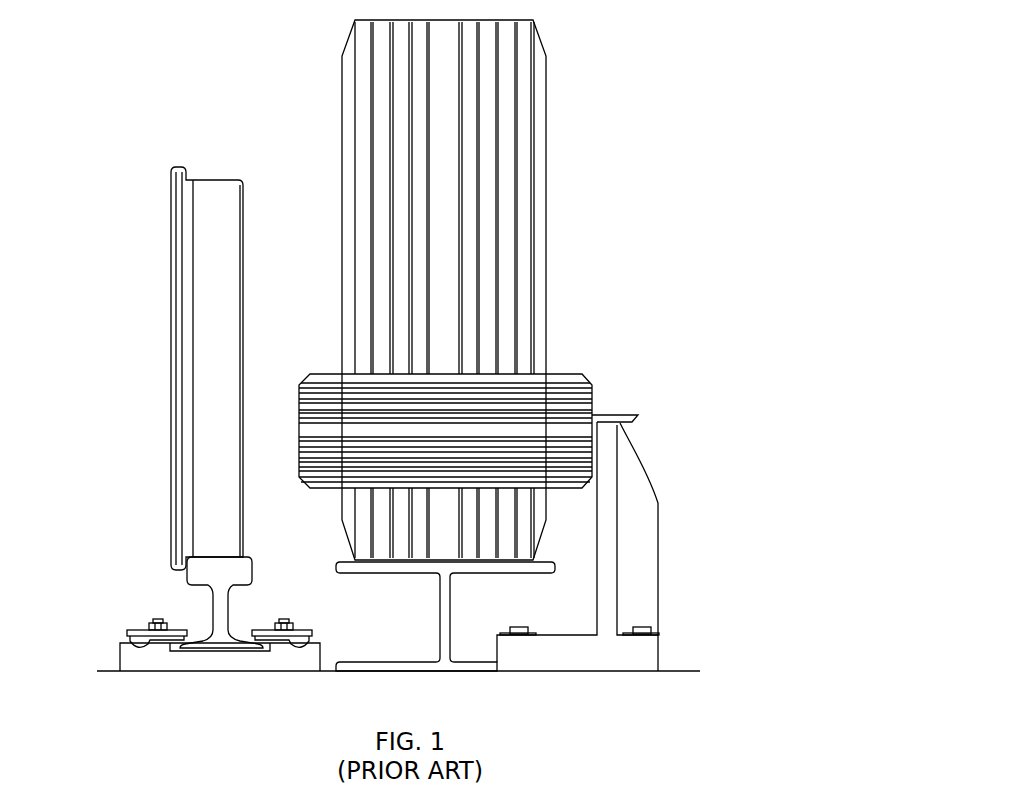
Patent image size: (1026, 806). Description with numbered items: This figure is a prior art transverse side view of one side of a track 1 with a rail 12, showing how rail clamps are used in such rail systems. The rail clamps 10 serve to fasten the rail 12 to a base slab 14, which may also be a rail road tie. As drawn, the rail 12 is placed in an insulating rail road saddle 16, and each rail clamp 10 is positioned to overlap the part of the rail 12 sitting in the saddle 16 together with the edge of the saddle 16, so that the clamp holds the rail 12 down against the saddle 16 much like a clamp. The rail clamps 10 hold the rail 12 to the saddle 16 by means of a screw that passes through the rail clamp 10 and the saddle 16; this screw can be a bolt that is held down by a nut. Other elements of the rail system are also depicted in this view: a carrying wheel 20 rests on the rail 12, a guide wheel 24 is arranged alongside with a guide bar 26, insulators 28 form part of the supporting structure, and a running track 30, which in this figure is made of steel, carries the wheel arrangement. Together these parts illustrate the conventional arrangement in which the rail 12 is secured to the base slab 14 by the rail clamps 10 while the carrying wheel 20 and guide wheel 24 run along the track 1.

The track 1 is at (630, 62).
The rail clamp 10 is at (133, 607).
The rail 12 is at (193, 577).
The base slab 14 is at (103, 672).
The insulating rail road saddle 16 is at (127, 662).
The carrying wheel 20 is at (546, 170).
The guide wheel 24 is at (592, 380).
The guide bar 26 is at (632, 420).
The insulators 28 is at (607, 542).
The running track 30 is at (467, 606).